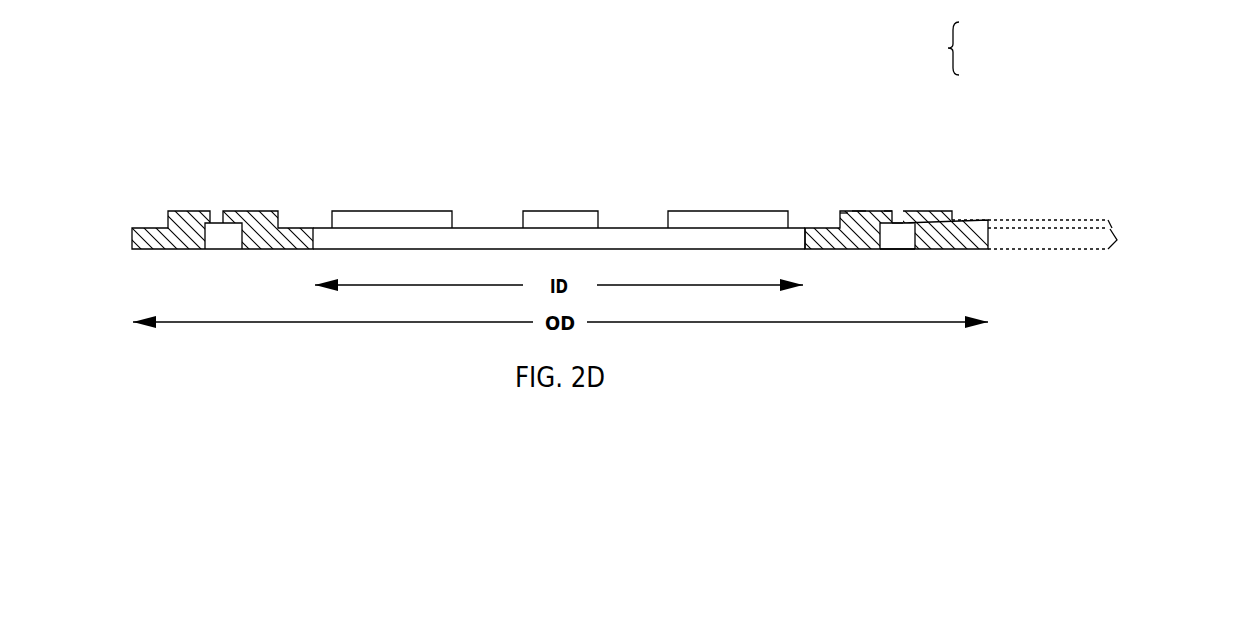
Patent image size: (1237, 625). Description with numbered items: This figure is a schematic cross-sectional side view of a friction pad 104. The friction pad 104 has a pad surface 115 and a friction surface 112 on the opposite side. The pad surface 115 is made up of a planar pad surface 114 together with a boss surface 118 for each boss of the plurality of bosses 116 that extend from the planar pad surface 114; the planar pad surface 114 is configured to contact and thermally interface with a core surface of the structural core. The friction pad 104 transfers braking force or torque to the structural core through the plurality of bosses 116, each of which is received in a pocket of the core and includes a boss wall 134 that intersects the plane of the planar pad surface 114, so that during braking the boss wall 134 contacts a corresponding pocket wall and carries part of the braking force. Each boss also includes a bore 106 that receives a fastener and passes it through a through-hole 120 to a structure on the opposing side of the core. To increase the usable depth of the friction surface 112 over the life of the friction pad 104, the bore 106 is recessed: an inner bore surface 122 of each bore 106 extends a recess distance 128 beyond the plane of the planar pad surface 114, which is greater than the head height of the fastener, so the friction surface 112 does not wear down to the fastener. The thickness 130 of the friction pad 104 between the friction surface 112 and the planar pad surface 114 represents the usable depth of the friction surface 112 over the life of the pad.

The friction pad 104 is at (608, 119).
The friction surface 112 is at (683, 249).
The planar pad surface 114 is at (813, 228).
The pad surface 115 is at (952, 48).
The boss surface 118 is at (846, 211).
The plurality of bosses 116 is at (858, 211).
The through-hole 120 is at (890, 212).
The inner bore surface 122 is at (901, 215).
The bore 106 is at (905, 238).
The boss wall 134 is at (813, 228).
The recess distance 128 is at (1108, 226).
The thickness 130 is at (1117, 240).